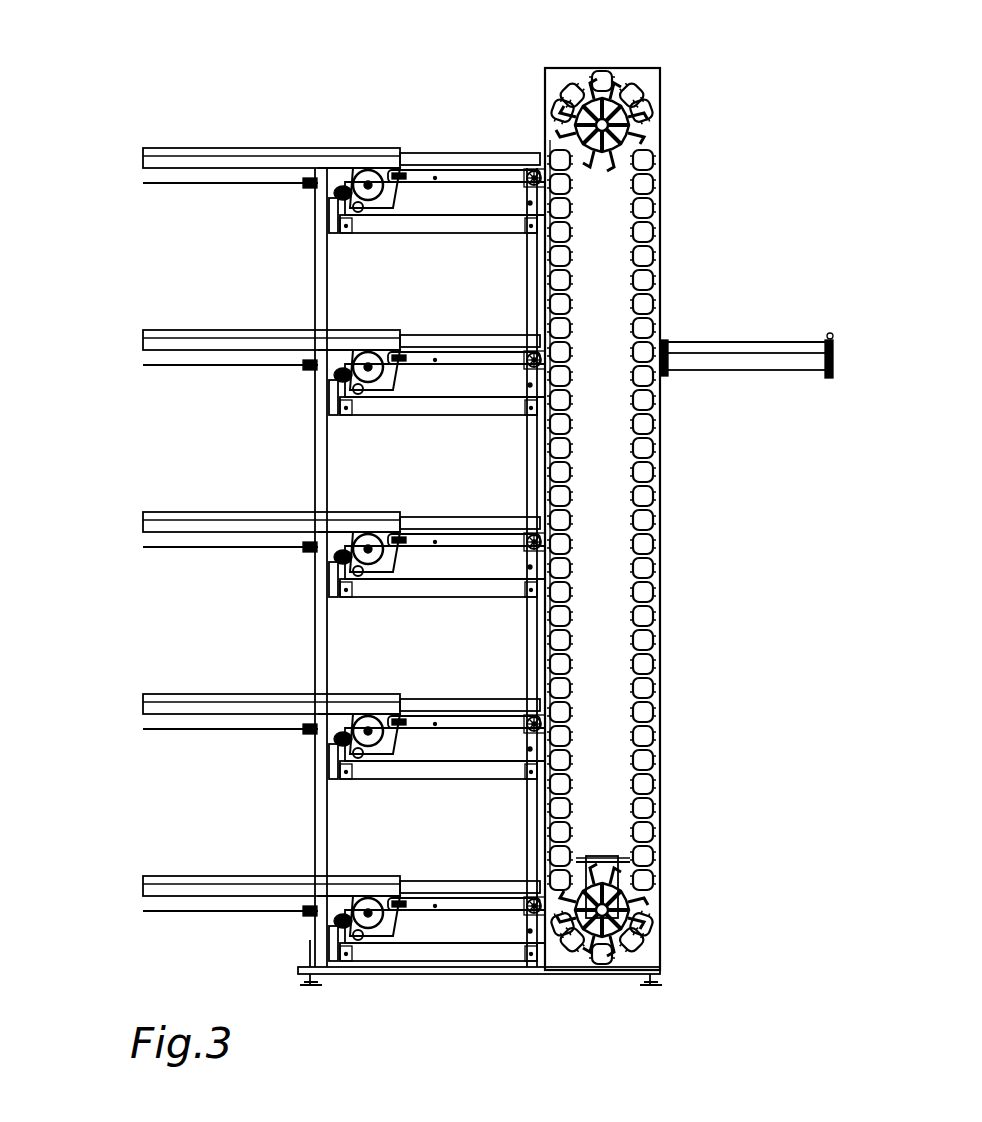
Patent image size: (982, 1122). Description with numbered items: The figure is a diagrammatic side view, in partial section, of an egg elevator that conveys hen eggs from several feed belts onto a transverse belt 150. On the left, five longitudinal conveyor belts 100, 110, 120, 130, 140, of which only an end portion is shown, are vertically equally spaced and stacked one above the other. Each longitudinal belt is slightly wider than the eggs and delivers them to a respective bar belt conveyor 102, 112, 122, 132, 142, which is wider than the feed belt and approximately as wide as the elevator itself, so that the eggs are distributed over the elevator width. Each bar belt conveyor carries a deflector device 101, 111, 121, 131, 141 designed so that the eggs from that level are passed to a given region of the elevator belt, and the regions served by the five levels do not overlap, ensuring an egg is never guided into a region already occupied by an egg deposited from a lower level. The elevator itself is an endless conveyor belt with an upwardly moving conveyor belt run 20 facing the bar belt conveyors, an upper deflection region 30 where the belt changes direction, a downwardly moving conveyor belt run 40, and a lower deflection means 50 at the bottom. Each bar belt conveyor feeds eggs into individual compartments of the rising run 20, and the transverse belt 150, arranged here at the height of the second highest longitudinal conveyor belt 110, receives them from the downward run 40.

The upwardly moving conveyor belt run 20 is at (580, 290).
The upper deflection region 30 is at (628, 108).
The downwardly moving conveyor belt run 40 is at (650, 330).
The lower deflection means 50 is at (625, 900).
The longitudinal conveyor belt 100 is at (185, 160).
The deflector device 101 is at (502, 160).
The bar belt conveyor 102 is at (460, 175).
The longitudinal conveyor belt 110 is at (185, 340).
The deflector device 111 is at (495, 340).
The bar belt conveyor 112 is at (450, 335).
The longitudinal conveyor belt 120 is at (185, 522).
The deflector device 121 is at (490, 525).
The bar belt conveyor 122 is at (455, 520).
The longitudinal conveyor belt 130 is at (190, 705).
The deflector device 131 is at (490, 705).
The bar belt conveyor 132 is at (455, 700).
The longitudinal conveyor belt 140 is at (175, 888).
The deflector device 141 is at (490, 890).
The bar belt conveyor 142 is at (455, 885).
The transverse belt 150 is at (765, 352).